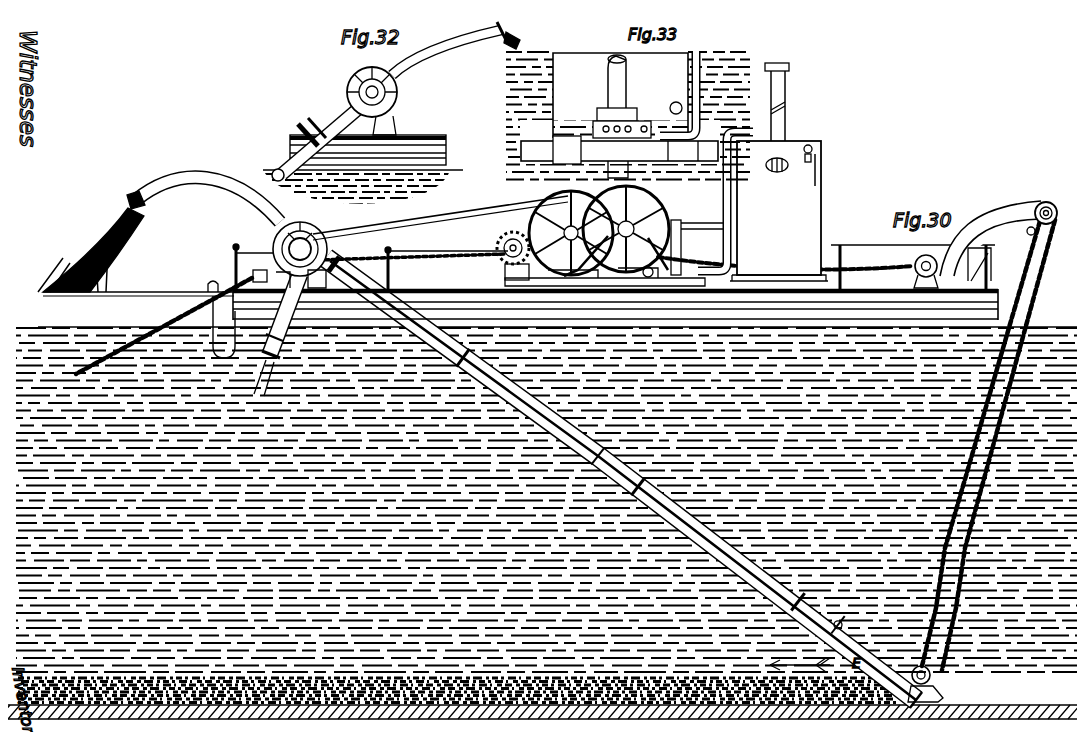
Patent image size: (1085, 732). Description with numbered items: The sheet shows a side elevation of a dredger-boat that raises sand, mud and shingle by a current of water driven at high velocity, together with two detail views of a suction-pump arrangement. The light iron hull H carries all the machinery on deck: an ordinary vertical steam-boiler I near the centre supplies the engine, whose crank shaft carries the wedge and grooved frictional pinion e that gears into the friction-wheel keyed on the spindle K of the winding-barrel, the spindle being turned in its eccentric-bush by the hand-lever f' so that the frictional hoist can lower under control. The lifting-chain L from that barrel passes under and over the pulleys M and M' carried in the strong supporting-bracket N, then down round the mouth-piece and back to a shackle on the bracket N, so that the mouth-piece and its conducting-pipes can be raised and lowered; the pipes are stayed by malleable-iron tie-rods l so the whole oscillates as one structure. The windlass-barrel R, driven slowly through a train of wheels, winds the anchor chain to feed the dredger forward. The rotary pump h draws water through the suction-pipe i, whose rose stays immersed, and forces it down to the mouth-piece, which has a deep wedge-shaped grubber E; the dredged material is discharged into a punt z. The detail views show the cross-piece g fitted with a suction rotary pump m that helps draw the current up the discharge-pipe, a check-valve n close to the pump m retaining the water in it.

In FIG. 30, the wedge-shaped grubber E is at (542, 718).
In FIG. 30, the punt z is at (139, 317).
In FIG. 30, the malleable-iron tie-rods l is at (624, 482).
In FIG. 30, the lifting-chain L is at (567, 461).
In FIG. 30, the hull H is at (615, 308).
In FIG. 32, the hull H is at (368, 154).
In FIG. 30, the suction-pipe i is at (169, 286).
In FIG. 30, the spindle of the winding-barrel K is at (400, 243).
In FIG. 30, the rotary pump h is at (332, 291).
In FIG. 32, the rotary pump h is at (389, 101).
In FIG. 30, the windlass-barrel R is at (498, 247).
In FIG. 30, the wedge and grooved frictional pinion e is at (571, 226).
In FIG. 30, the second wheel l' is at (616, 231).
In FIG. 30, the hand-lever f' is at (697, 231).
In FIG. 30, the vertical steam-boiler I is at (763, 172).
In FIG. 30, the pulley M is at (913, 265).
In FIG. 30, the supporting-bracket N is at (990, 241).
In FIG. 30, the pulley M' is at (1049, 204).
In FIG. 33, the check-valve n is at (620, 95).
In FIG. 33, the cross-piece g is at (622, 96).
In FIG. 33, the suction rotary pump m is at (619, 157).